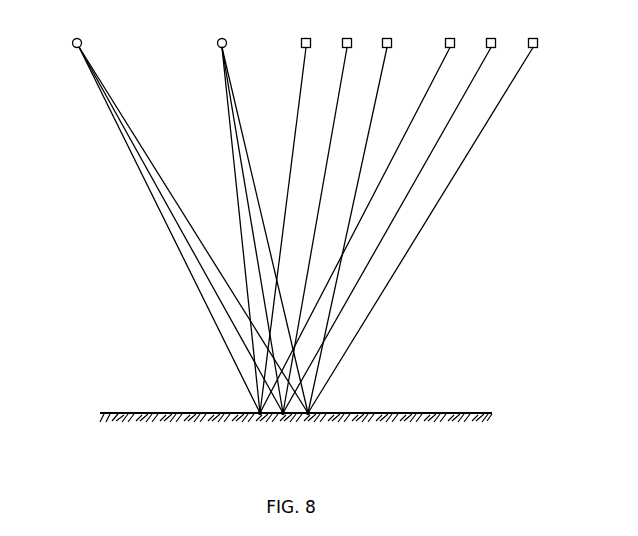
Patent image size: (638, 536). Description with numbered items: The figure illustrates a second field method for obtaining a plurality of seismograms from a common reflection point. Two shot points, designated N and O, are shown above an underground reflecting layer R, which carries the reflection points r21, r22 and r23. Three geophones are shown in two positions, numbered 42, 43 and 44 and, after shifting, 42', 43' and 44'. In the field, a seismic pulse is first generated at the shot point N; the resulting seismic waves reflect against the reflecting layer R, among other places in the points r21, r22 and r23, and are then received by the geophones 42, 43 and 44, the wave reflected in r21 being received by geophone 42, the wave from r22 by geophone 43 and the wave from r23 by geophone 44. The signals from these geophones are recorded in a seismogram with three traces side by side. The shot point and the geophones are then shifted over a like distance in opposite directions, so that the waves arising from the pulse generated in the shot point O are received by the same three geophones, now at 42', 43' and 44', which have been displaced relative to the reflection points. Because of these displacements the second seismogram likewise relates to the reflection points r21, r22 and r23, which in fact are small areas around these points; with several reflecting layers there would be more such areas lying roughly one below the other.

The shot point O is at (189, 214).
The shot point N is at (262, 214).
The geophone 42 is at (288, 215).
The geophone 43 is at (320, 215).
The geophone 44 is at (352, 215).
The geophone 42' is at (361, 215).
The geophone 43' is at (393, 215).
The geophone 44' is at (426, 215).
The reflection point r21 is at (261, 414).
The reflection point r22 is at (283, 414).
The reflection point r23 is at (308, 414).
The underground reflecting layer R is at (415, 414).